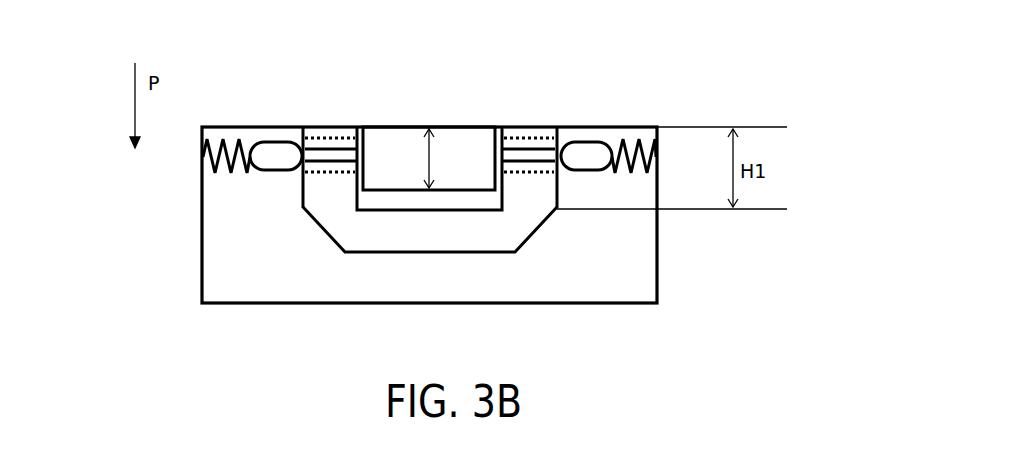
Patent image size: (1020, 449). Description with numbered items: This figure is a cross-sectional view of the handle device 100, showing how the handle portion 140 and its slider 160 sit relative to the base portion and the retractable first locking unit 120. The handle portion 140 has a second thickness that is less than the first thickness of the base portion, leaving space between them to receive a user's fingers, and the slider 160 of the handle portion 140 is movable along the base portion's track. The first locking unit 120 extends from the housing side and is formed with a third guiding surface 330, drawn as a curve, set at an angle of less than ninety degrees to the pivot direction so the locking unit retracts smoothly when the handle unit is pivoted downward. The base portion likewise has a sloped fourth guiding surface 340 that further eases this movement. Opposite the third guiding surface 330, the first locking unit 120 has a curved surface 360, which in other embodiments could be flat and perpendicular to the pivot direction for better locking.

The handle device 100 is at (693, 105).
The first locking unit 120 is at (275, 155).
The handle portion 140 is at (463, 145).
The slider 160 is at (327, 155).
The third guiding surface 330 is at (304, 138).
The fourth guiding surface 340 is at (318, 237).
The curved surface 360 is at (300, 190).